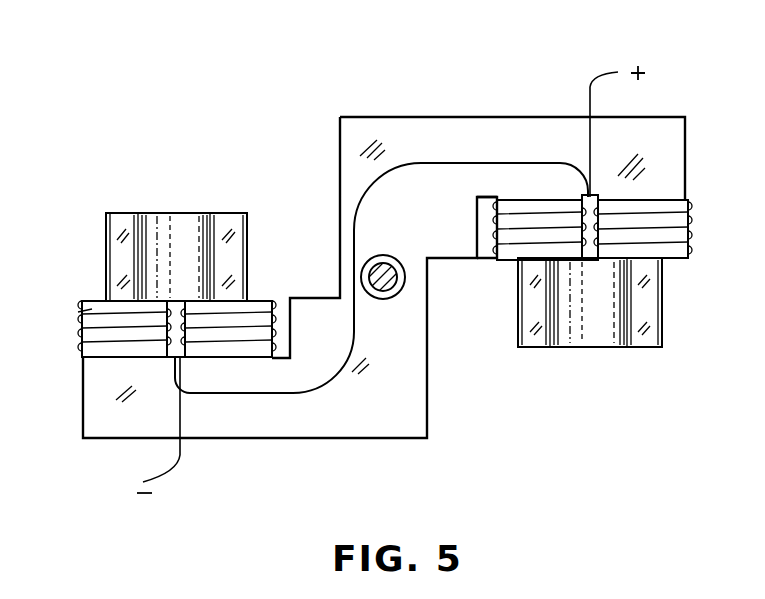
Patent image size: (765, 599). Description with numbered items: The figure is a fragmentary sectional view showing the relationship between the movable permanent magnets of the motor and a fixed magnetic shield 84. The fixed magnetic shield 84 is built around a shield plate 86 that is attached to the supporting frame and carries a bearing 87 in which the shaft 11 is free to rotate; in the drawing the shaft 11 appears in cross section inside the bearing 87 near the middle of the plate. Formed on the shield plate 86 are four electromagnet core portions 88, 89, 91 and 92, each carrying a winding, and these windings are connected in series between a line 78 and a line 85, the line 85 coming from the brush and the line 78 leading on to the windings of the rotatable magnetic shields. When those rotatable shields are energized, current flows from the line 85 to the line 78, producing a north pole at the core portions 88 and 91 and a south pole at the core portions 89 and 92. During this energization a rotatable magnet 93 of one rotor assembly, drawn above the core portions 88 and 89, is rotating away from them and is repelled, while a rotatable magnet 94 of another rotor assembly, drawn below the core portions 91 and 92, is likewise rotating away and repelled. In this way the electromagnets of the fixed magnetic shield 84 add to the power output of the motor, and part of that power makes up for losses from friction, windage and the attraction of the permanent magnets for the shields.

The shaft 11 is at (388, 268).
The line 78 is at (180, 455).
The fixed magnetic shield 84 is at (438, 106).
The line 85 is at (590, 85).
The shield plate 86 is at (384, 425).
The bearing 87 is at (385, 299).
The electromagnet core portion 88 is at (92, 306).
The electromagnet core portion 89 is at (262, 302).
The electromagnet core portion 91 is at (490, 254).
The electromagnet core portion 92 is at (690, 243).
The rotatable magnet 93 is at (174, 230).
The rotatable magnet 94 is at (585, 335).